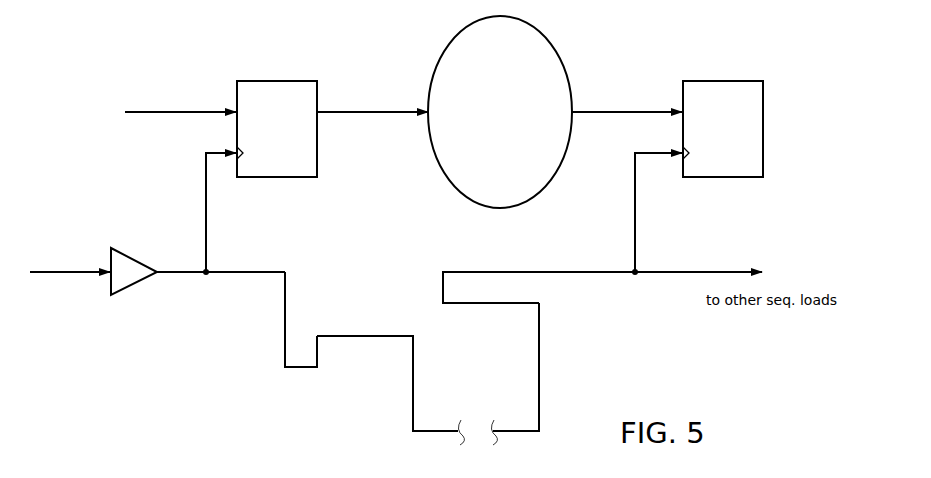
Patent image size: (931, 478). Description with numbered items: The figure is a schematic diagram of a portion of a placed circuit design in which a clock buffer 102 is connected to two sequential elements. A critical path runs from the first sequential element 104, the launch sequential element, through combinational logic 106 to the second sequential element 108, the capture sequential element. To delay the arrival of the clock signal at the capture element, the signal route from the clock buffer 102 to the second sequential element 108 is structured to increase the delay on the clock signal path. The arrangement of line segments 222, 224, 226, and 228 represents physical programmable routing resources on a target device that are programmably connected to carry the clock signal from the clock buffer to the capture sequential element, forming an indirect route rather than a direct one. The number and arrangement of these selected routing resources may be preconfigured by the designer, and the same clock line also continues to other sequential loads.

The clock buffer 102 is at (111, 250).
The first sequential element 104 is at (277, 129).
The combinational logic 106 is at (500, 112).
The second sequential element 108 is at (723, 129).
The segment 222 is at (285, 289).
The segment 224 is at (413, 356).
The segment 226 is at (539, 358).
The segment 228 is at (510, 303).